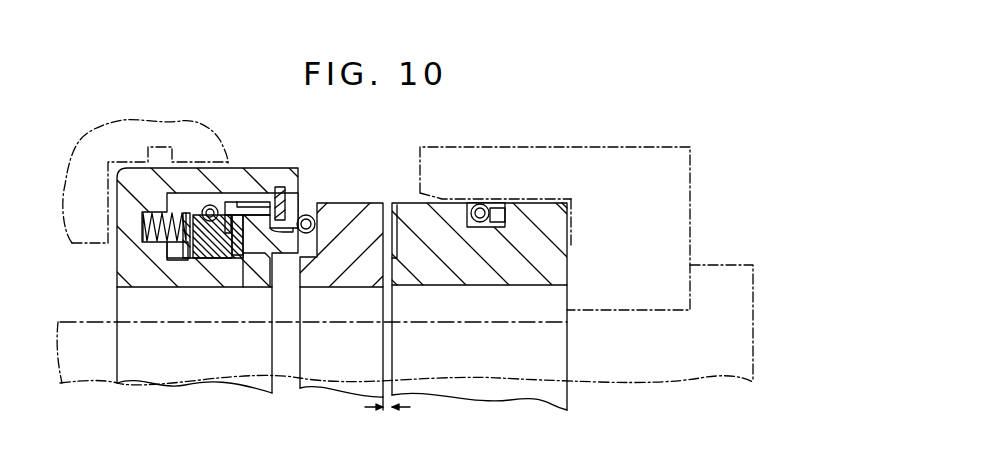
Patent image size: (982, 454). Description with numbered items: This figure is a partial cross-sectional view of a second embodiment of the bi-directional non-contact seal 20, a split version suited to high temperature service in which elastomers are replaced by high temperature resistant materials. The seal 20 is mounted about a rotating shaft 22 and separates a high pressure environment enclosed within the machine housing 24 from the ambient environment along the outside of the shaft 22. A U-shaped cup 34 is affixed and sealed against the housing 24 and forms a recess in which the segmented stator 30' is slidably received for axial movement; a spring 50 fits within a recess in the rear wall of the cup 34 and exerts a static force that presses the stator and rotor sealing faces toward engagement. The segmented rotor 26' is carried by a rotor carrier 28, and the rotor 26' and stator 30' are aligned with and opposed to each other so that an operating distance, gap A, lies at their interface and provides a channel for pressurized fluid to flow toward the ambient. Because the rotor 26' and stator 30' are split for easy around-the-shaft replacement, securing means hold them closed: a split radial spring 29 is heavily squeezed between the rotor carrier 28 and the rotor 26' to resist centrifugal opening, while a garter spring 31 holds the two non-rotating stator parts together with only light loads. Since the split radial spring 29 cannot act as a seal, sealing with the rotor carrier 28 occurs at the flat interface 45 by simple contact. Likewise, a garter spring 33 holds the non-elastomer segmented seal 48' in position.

The bi-directional non-contact seal 20 is at (335, 216).
The rotating shaft 22 is at (755, 338).
The machine housing 24 is at (122, 121).
The segmented rotor 26' is at (464, 295).
The rotor carrier 28 is at (690, 220).
The split radial spring 29 is at (484, 205).
The segmented stator 30' is at (391, 280).
The garter spring 31 is at (309, 215).
The garter spring 33 is at (213, 207).
The U-shaped cup 34 is at (183, 290).
The flat interface 45 is at (572, 246).
The segmented seal 48' is at (208, 261).
The spring 50 is at (147, 243).
The gap A is at (387, 420).